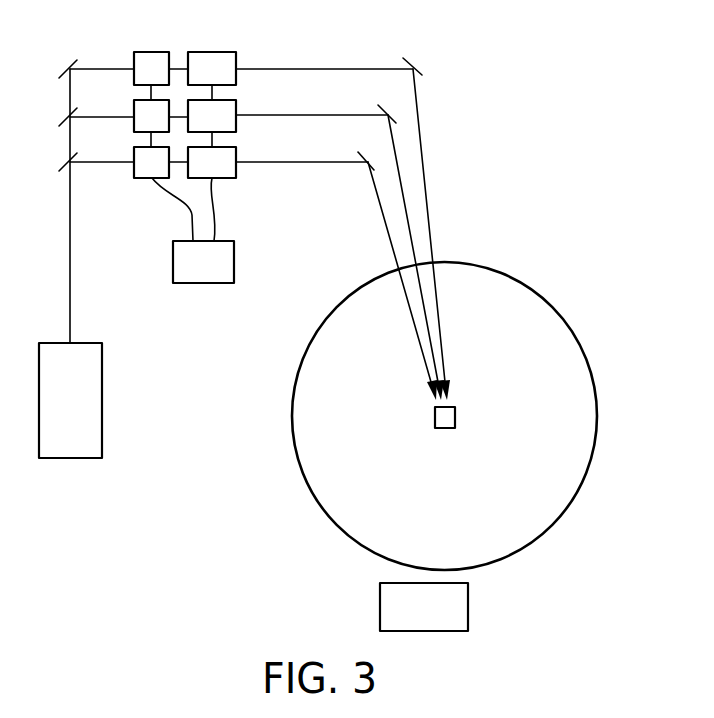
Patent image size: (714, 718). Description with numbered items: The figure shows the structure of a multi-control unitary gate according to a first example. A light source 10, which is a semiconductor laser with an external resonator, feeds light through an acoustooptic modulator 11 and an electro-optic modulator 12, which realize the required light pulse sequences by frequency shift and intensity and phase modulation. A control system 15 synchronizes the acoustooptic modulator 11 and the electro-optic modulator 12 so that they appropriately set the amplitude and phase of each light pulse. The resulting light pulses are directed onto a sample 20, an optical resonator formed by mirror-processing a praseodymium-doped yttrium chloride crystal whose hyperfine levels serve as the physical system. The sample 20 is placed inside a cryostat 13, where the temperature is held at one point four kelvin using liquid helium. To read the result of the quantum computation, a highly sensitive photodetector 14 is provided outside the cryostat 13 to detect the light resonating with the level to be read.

The light source 10 is at (102, 405).
The acoustooptic modulator 11 is at (145, 178).
The electro-optic modulator 12 is at (223, 51).
The cryostat 13 is at (292, 436).
The photodetector 14 is at (468, 603).
The control system 15 is at (203, 283).
The sample 20 is at (445, 428).